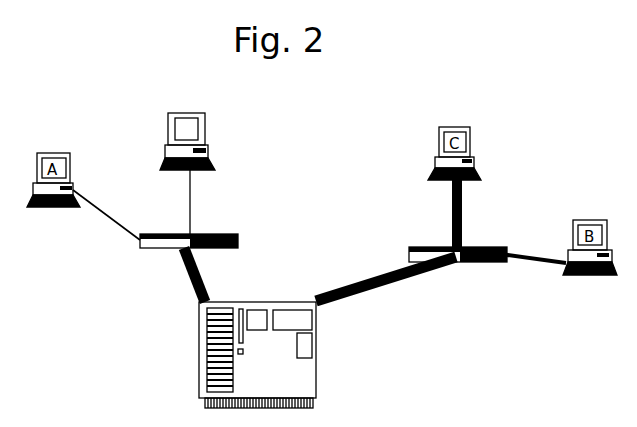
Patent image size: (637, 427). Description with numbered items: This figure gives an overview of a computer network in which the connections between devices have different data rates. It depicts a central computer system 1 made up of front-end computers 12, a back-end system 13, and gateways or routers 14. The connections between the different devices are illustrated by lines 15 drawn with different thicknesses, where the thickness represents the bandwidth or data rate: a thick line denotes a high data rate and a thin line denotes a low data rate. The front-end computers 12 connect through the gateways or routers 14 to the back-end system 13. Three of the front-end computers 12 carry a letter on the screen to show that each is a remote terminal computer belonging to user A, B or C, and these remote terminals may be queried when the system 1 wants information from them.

The system 1 is at (308, 322).
The front-end computers 12 is at (205, 129).
The back-end system 13 is at (238, 355).
The gateways or routers 14 is at (329, 247).
The lines 15 is at (441, 208).